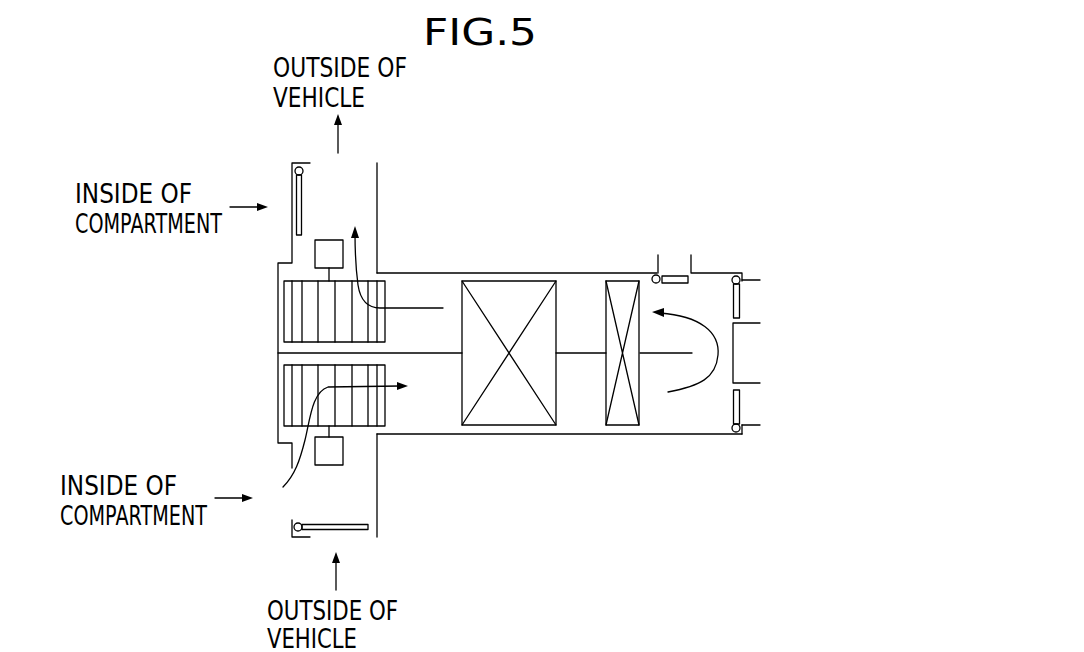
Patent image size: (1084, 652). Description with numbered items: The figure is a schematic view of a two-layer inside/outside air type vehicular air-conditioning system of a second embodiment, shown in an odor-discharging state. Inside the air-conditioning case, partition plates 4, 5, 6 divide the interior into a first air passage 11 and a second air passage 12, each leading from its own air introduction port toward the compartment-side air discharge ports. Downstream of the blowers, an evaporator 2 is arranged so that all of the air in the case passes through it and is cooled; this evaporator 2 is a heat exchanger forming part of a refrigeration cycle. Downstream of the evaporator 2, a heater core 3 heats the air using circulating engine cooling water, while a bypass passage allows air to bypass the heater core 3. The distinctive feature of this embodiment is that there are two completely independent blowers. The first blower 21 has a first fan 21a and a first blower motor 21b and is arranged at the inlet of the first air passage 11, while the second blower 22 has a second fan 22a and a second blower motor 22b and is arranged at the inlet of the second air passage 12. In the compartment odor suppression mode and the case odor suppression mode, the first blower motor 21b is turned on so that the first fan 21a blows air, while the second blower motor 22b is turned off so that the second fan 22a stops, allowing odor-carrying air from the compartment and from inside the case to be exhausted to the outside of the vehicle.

The evaporator 2 is at (525, 292).
The heater core 3 is at (621, 292).
The partition plate 4 is at (442, 353).
The partition plate 5 is at (596, 353).
The partition plate 6 is at (662, 353).
The first air passage 11 is at (573, 398).
The second air passage 12 is at (442, 288).
The first blower 21 is at (290, 448).
The first fan 21a is at (308, 387).
The first blower motor 21b is at (343, 450).
The second blower 22 is at (281, 251).
The second fan 22a is at (308, 315).
The second blower motor 22b is at (328, 240).